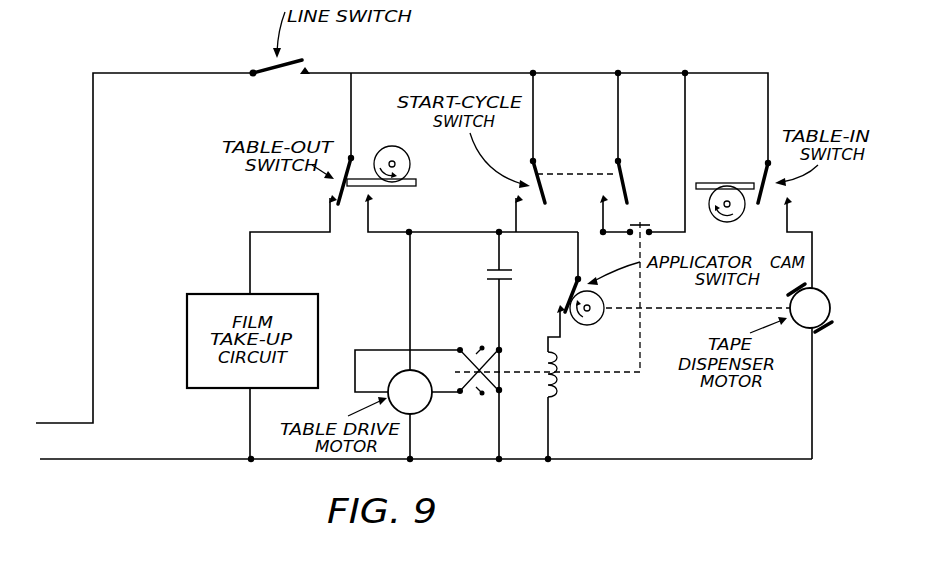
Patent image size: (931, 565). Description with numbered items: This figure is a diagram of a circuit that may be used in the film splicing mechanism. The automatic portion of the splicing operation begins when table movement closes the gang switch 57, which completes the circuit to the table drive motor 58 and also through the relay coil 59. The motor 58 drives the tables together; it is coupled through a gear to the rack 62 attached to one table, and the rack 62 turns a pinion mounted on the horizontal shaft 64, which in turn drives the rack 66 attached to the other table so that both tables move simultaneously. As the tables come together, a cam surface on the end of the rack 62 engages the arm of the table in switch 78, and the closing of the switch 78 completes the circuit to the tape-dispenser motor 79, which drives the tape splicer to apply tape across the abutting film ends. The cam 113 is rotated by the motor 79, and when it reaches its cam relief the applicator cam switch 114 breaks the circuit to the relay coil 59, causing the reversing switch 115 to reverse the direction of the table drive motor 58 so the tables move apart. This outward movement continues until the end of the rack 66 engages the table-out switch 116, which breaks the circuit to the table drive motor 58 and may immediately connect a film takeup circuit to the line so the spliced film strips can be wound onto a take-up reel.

The gang switch 57 is at (572, 173).
The table drive motor 58 is at (426, 409).
The relay coil 59 is at (557, 388).
The rack 62 is at (709, 182).
The horizontal shaft 64 is at (411, 160).
The rack 66 is at (405, 187).
The table in switch 78 is at (763, 196).
The tape-dispenser motor 79 is at (827, 291).
The cam 113 is at (599, 323).
The applicator cam switch 114 is at (569, 298).
The reversing switch 115 is at (469, 370).
The table-out switch 116 is at (343, 206).